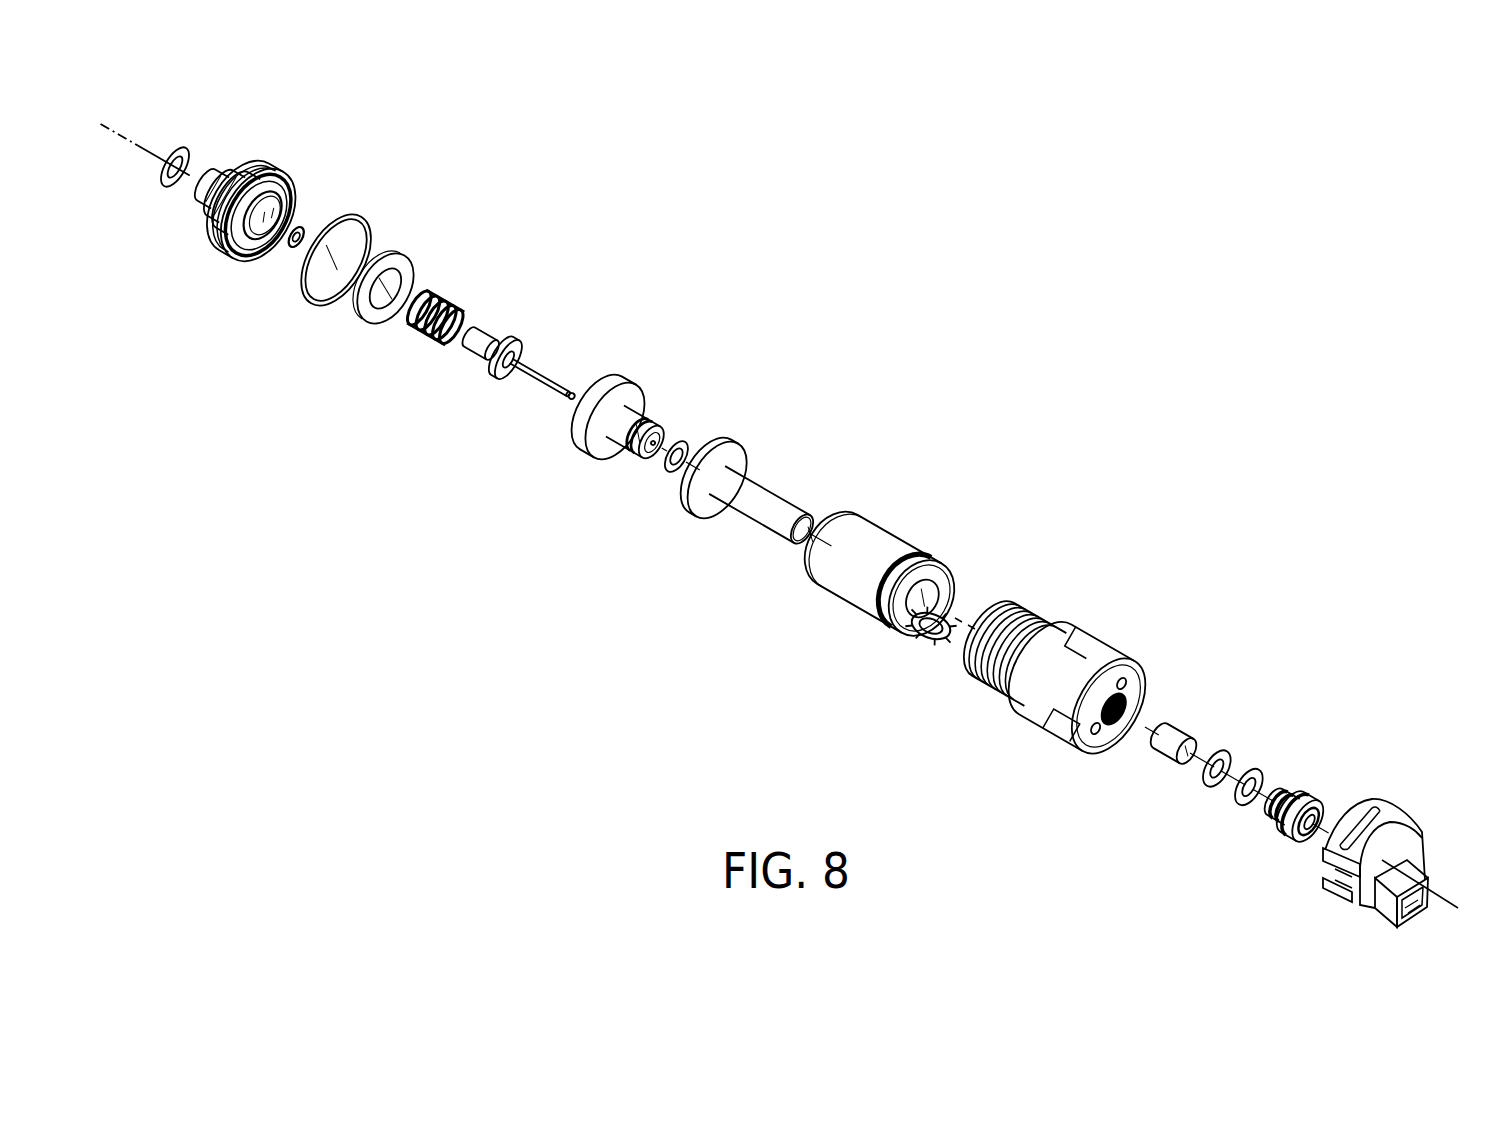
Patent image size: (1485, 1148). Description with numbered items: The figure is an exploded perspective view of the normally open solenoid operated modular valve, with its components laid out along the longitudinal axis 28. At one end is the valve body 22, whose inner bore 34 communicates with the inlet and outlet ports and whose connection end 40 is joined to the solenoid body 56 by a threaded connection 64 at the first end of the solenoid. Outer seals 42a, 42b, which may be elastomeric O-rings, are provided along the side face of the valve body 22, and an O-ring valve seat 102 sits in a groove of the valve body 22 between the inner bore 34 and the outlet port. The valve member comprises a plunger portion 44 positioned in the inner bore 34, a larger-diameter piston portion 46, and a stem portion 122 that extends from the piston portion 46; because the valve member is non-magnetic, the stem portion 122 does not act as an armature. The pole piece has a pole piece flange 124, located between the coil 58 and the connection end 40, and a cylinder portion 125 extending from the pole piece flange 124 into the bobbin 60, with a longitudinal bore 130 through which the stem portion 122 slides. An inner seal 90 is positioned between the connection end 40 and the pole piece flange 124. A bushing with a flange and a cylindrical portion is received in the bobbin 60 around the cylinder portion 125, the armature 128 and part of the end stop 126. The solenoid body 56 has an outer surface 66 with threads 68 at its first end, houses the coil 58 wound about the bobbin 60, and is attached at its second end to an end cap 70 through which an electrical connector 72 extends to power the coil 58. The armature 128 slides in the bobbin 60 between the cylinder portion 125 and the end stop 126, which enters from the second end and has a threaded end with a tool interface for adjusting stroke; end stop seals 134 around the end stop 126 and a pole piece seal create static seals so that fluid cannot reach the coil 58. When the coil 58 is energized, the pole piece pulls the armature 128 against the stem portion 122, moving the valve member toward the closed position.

The valve body 22 is at (311, 241).
The longitudinal axis 28 is at (150, 142).
The inner bore 34 is at (303, 226).
The connection end 40 is at (236, 224).
The outer seal 42a is at (187, 148).
The outer seal 42b is at (325, 303).
The plunger portion 44 is at (483, 343).
The piston portion 46 is at (527, 347).
The solenoid body 56 is at (1072, 646).
The coil 58 is at (863, 587).
The bobbin 60 is at (943, 573).
The threaded connection 64 is at (218, 234).
The outer surface 66 is at (1035, 702).
The threads 68 is at (1030, 600).
The end cap 70 is at (1417, 803).
The electrical connector 72 is at (932, 643).
The inner seal 90 is at (397, 253).
The O-ring valve seat 102 is at (308, 232).
The stem portion 122 is at (548, 373).
The pole piece flange 124 is at (628, 434).
The cylinder portion 125 is at (618, 430).
The end stop 126 is at (1322, 785).
The armature 128 is at (1178, 733).
The longitudinal bore 130 is at (652, 442).
The end stop seals 134 is at (1262, 768).